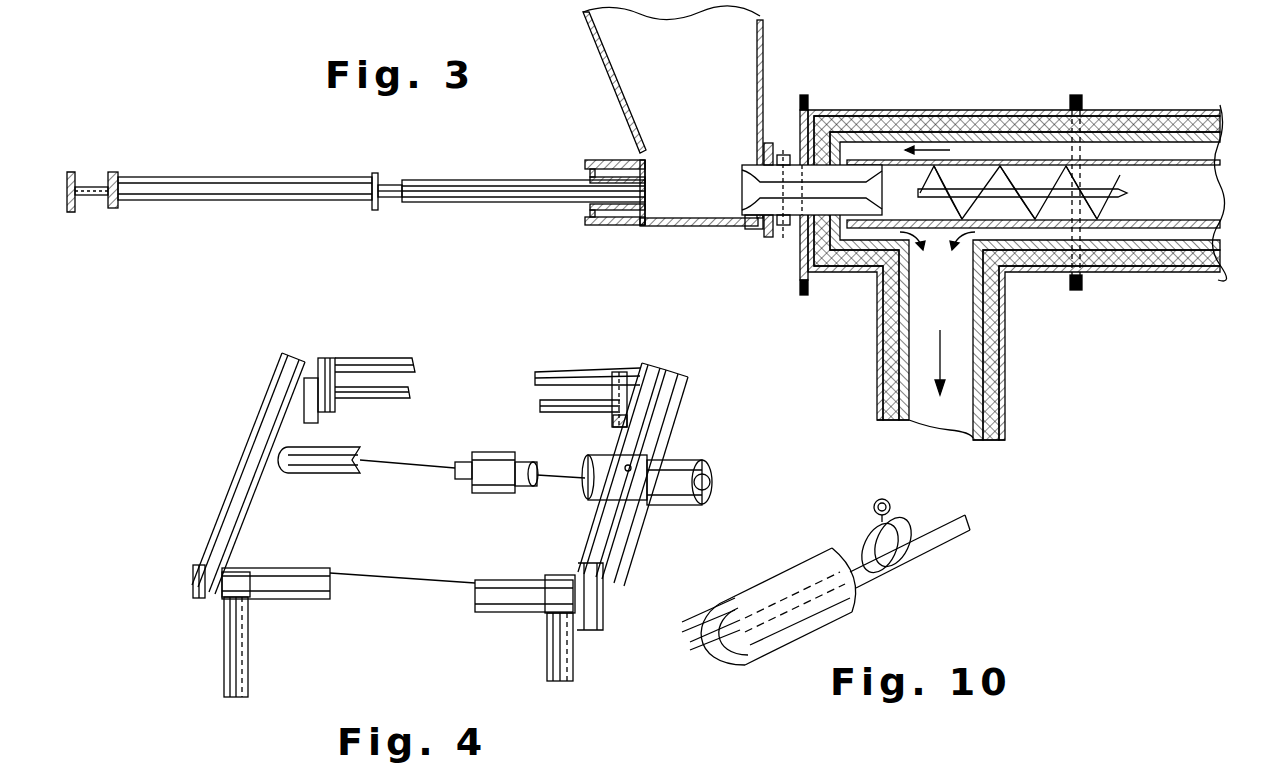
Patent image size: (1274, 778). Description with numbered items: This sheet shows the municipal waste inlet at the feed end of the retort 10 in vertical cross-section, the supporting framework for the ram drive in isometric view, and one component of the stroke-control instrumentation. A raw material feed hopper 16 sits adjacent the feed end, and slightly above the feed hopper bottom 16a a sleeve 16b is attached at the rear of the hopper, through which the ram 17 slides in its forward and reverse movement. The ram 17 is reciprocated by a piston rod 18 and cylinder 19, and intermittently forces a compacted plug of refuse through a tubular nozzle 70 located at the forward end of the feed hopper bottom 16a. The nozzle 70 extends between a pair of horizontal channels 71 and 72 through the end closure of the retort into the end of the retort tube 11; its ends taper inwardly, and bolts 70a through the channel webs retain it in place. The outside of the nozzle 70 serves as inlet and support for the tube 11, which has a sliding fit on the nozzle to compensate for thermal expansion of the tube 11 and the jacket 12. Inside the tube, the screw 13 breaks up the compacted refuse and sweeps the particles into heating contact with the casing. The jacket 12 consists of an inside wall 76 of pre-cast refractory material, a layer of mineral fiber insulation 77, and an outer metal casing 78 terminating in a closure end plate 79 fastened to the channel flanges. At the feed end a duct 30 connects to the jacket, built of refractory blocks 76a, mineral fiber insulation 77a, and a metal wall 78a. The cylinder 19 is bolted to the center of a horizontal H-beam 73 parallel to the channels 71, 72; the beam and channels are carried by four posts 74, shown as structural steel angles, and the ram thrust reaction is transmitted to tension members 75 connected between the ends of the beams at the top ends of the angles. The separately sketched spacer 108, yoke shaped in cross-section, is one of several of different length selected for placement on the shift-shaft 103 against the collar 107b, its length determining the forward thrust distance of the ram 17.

In FIG. 3, the retort 10 is at (1167, 210).
In FIG. 3, the retort tube 11 is at (992, 166).
In FIG. 3, the retort jacket 12 is at (876, 150).
In FIG. 3, the screw 13 is at (963, 188).
In FIG. 3, the raw material feed hopper 16 is at (697, 95).
In FIG. 3, the feed hopper bottom 16a is at (727, 225).
In FIG. 3, the sleeve 16b is at (591, 160).
In FIG. 4, the sleeve 16b is at (490, 493).
In FIG. 3, the ram 17 is at (512, 180).
In FIG. 4, the ram 17 is at (458, 463).
In FIG. 3, the piston rod 18 is at (396, 184).
In FIG. 3, the cylinder 19 is at (248, 177).
In FIG. 4, the cylinder 19 is at (320, 473).
In FIG. 3, the duct 30 is at (952, 316).
In FIG. 3, the tubular nozzle 70 is at (770, 212).
In FIG. 4, the tubular nozzle 70 is at (680, 465).
In FIG. 3, the bolts 70a is at (783, 158).
In FIG. 4, the bolts 70a is at (648, 507).
In FIG. 3, the horizontal channel 71 is at (762, 105).
In FIG. 4, the horizontal channel 71 is at (680, 385).
In FIG. 3, the horizontal channel 72 is at (782, 222).
In FIG. 4, the horizontal channel 72 is at (690, 412).
In FIG. 3, the horizontal H-beam 73 is at (90, 183).
In FIG. 4, the horizontal H-beam 73 is at (222, 487).
In FIG. 4, the posts 74 is at (325, 412).
In FIG. 4, the tension members 75 is at (547, 402).
In FIG. 3, the inside wall 76 is at (1198, 112).
In FIG. 3, the refractory blocks 76a is at (902, 422).
In FIG. 3, the mineral fiber insulation 77 is at (918, 120).
In FIG. 3, the mineral fiber insulation 77a is at (886, 418).
In FIG. 3, the metal casing 78 is at (825, 112).
In FIG. 3, the metal wall 78a is at (882, 376).
In FIG. 3, the closure end plate 79 is at (805, 95).
In FIG. 10, the shift-shaft 103 is at (935, 520).
In FIG. 10, the collar 107b is at (893, 570).
In FIG. 10, the spacer 108 is at (775, 577).